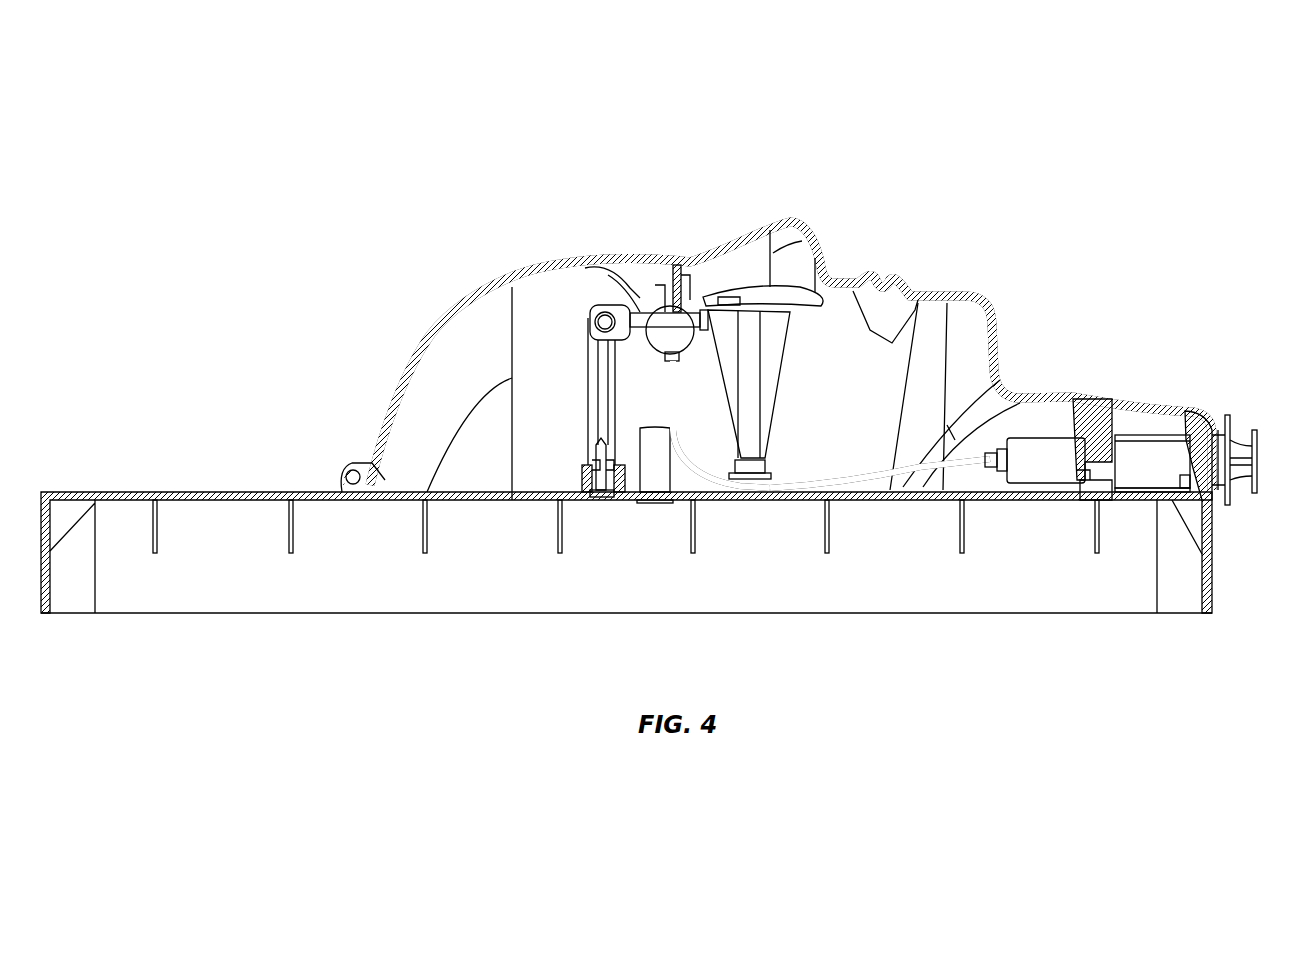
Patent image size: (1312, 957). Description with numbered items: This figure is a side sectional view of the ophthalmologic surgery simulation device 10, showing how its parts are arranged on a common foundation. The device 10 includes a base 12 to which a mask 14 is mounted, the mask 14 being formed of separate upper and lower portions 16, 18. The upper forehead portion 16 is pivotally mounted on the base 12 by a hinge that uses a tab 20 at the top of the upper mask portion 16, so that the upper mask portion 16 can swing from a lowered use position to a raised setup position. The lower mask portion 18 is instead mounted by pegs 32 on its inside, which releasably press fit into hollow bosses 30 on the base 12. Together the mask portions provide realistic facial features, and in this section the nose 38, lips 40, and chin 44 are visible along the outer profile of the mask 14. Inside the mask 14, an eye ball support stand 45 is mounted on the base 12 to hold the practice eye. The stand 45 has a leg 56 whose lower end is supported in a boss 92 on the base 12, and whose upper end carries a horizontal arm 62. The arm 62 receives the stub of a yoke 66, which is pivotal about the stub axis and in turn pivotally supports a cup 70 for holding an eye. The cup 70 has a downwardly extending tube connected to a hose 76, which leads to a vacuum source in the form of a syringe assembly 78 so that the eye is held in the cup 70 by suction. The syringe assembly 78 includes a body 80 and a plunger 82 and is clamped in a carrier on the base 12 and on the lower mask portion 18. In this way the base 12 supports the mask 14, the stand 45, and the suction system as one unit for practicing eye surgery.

The ophthalmologic surgery simulation device 10 is at (170, 114).
The base 12 is at (131, 491).
The mask 14 is at (466, 302).
The upper mask portion 16 is at (392, 400).
The lower mask portion 18 is at (1003, 352).
The tab 20 is at (353, 466).
The hollow boss 30 is at (770, 472).
The peg 32 is at (755, 418).
The nose 38 is at (788, 222).
The lips 40 is at (893, 282).
The chin 44 is at (975, 296).
The eye ball support stand 45 is at (612, 303).
The leg 56 is at (590, 378).
The horizontal arm 62 is at (640, 340).
The yoke 66 is at (657, 310).
The cup 70 is at (690, 350).
The hose 76 is at (910, 468).
The syringe assembly 78 is at (1150, 440).
The body 80 is at (1137, 480).
The plunger 82 is at (1255, 450).
The boss 92 is at (585, 480).